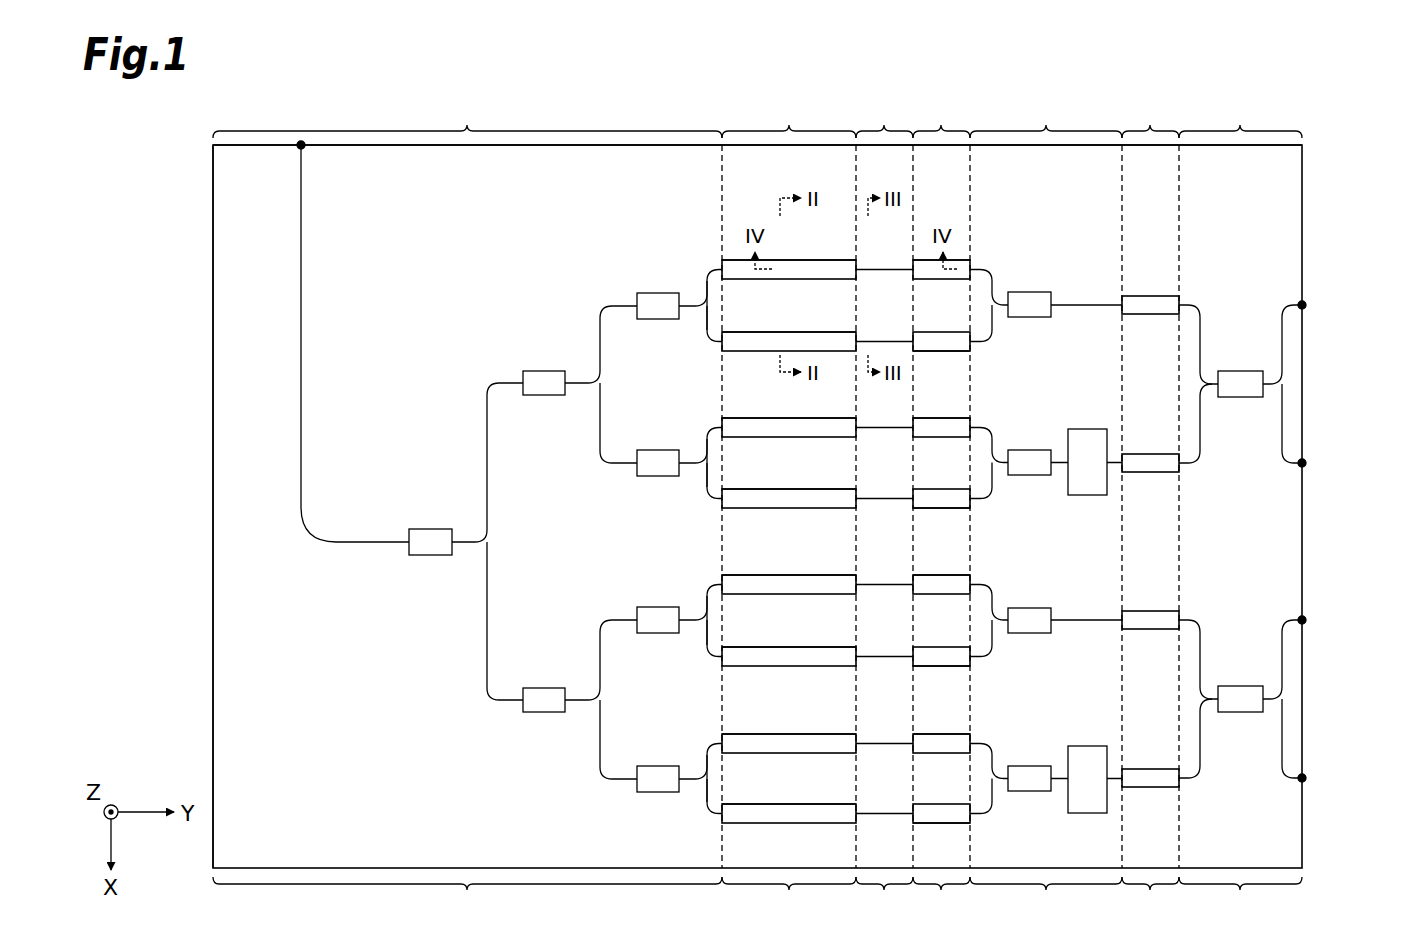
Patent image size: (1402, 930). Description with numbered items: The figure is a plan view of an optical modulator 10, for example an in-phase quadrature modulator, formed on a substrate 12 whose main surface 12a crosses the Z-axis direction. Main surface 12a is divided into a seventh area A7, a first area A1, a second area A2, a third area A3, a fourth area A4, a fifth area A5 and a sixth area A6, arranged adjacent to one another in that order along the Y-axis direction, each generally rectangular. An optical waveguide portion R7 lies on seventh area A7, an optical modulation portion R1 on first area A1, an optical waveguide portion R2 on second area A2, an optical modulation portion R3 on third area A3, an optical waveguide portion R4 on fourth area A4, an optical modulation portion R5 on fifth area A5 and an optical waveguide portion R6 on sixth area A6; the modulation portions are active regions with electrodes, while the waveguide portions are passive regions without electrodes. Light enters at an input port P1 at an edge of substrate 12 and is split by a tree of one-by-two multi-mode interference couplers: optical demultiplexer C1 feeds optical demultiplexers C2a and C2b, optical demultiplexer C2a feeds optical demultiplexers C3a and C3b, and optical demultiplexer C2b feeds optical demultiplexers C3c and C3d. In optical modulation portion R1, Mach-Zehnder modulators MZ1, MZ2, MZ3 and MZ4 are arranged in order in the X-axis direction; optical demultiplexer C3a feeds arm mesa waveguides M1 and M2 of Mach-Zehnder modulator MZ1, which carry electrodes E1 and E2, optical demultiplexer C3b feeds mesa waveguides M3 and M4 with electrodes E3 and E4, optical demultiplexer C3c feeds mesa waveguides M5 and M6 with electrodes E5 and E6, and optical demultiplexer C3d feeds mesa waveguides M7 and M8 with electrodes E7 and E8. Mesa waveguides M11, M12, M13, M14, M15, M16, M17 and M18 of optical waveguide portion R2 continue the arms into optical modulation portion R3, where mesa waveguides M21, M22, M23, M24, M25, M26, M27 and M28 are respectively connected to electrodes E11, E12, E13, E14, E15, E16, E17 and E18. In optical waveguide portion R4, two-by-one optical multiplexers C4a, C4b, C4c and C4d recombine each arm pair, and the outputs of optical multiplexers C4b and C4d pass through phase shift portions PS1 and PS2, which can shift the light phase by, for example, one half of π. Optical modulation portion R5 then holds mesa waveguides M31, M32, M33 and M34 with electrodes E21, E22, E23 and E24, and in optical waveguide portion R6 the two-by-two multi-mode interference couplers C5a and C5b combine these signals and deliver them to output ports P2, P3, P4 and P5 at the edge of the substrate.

The optical modulator 10 is at (176, 184).
The substrate 12 is at (1302, 216).
The main surface 12a is at (1268, 193).
The input port P1 is at (353, 341).
The output port P2 is at (1319, 305).
The output port P3 is at (1319, 463).
The output port P4 is at (1319, 620).
The output port P5 is at (1319, 778).
The optical demultiplexer C1 is at (433, 529).
The optical demultiplexer C2a is at (544, 371).
The optical demultiplexer C2b is at (544, 688).
The optical demultiplexer C3a is at (658, 293).
The optical demultiplexer C3b is at (658, 450).
The optical demultiplexer C3c is at (658, 607).
The optical demultiplexer C3d is at (658, 766).
The optical multiplexer C4a is at (1029, 292).
The optical multiplexer C4b is at (1029, 450).
The optical multiplexer C4c is at (1029, 608).
The optical multiplexer C4d is at (1029, 766).
The multi-mode interference coupler C5a is at (1241, 371).
The multi-mode interference coupler C5b is at (1241, 686).
The electrode E1 is at (728, 262).
The electrode E2 is at (749, 331).
The electrode E3 is at (749, 417).
The electrode E4 is at (749, 488).
The electrode E5 is at (749, 574).
The electrode E6 is at (749, 646).
The electrode E7 is at (749, 733).
The electrode E8 is at (749, 803).
The electrode E11 is at (972, 262).
The electrode E12 is at (946, 331).
The electrode E13 is at (946, 417).
The electrode E14 is at (946, 488).
The electrode E15 is at (946, 574).
The electrode E16 is at (946, 646).
The electrode E17 is at (946, 733).
The electrode E18 is at (946, 803).
The electrode E21 is at (1153, 296).
The electrode E22 is at (1153, 454).
The electrode E23 is at (1153, 611).
The electrode E24 is at (1153, 769).
The mesa waveguide M1 is at (786, 258).
The mesa waveguide M2 is at (786, 330).
The mesa waveguide M3 is at (786, 416).
The mesa waveguide M4 is at (786, 487).
The mesa waveguide M5 is at (786, 573).
The mesa waveguide M6 is at (786, 645).
The mesa waveguide M7 is at (786, 732).
The mesa waveguide M8 is at (786, 802).
The mesa waveguide M11 is at (883, 268).
The mesa waveguide M12 is at (883, 340).
The mesa waveguide M13 is at (883, 426).
The mesa waveguide M14 is at (883, 497).
The mesa waveguide M15 is at (883, 583).
The mesa waveguide M16 is at (883, 655).
The mesa waveguide M17 is at (883, 742).
The mesa waveguide M18 is at (883, 812).
The mesa waveguide M21 is at (976, 272).
The mesa waveguide M22 is at (980, 352).
The mesa waveguide M23 is at (976, 419).
The mesa waveguide M24 is at (980, 509).
The mesa waveguide M25 is at (976, 577).
The mesa waveguide M26 is at (980, 667).
The mesa waveguide M27 is at (976, 735).
The mesa waveguide M28 is at (980, 826).
The mesa waveguide M31 is at (1190, 300).
The mesa waveguide M32 is at (1190, 474).
The mesa waveguide M33 is at (1190, 615).
The mesa waveguide M34 is at (1190, 789).
The Mach-Zehnder modulator MZ1 is at (698, 348).
The Mach-Zehnder modulator MZ2 is at (698, 506).
The Mach-Zehnder modulator MZ3 is at (698, 663).
The Mach-Zehnder modulator MZ4 is at (698, 821).
The phase shift portion PS1 is at (1089, 429).
The phase shift portion PS2 is at (1089, 746).
The first area A1 is at (789, 118).
The second area A2 is at (884, 118).
The third area A3 is at (941, 118).
The fourth area A4 is at (1046, 118).
The fifth area A5 is at (1150, 118).
The sixth area A6 is at (1240, 118).
The seventh area A7 is at (467, 118).
The optical modulation portion R1 is at (789, 899).
The optical waveguide portion R2 is at (884, 899).
The optical modulation portion R3 is at (941, 899).
The optical waveguide portion R4 is at (1046, 899).
The optical modulation portion R5 is at (1150, 899).
The optical waveguide portion R6 is at (1240, 899).
The optical waveguide portion R7 is at (467, 899).